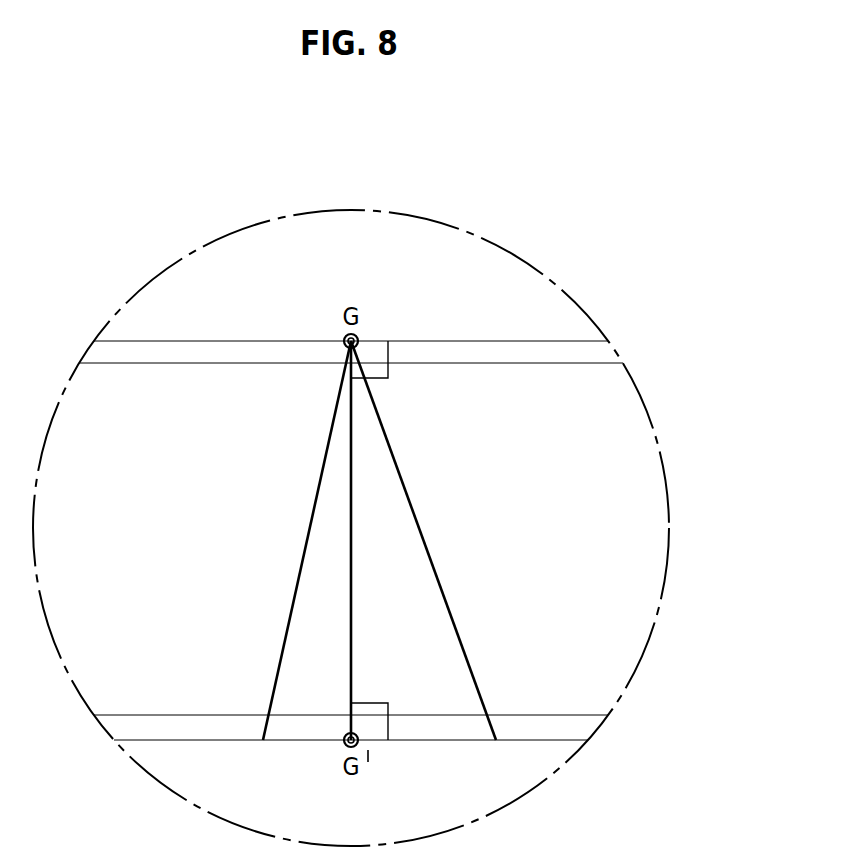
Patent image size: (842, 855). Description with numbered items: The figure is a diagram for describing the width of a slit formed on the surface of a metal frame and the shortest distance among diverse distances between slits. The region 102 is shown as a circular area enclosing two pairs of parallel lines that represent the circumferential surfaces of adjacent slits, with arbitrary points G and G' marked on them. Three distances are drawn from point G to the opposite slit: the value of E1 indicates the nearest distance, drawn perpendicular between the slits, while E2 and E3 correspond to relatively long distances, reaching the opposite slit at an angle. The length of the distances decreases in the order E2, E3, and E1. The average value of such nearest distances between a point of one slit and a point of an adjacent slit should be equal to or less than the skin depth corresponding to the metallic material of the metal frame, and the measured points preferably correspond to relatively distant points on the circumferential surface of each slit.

The display panel / lens region 102 is at (502, 348).
The nearest distance E1 is at (368, 540).
The relatively long distance E2 is at (423, 540).
The relatively long distance E3 is at (307, 540).